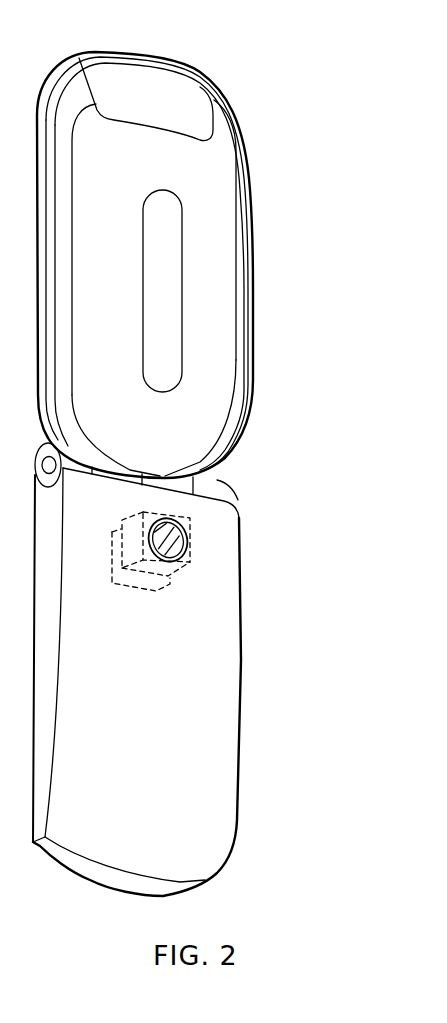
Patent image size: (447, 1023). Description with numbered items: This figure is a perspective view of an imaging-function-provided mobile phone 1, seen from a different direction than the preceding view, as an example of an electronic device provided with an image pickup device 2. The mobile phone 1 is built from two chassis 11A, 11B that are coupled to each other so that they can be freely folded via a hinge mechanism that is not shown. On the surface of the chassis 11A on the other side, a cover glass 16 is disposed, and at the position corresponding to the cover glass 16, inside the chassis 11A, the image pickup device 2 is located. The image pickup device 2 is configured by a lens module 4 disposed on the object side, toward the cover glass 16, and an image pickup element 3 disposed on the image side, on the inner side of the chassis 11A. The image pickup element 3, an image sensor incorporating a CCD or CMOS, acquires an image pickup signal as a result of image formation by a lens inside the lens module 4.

The mobile phone 1 is at (377, 60).
The chassis 11B is at (232, 268).
The chassis 11A is at (210, 732).
The image pickup device 2 is at (311, 571).
The lens module 4 is at (194, 562).
The image pickup element 3 is at (147, 594).
The cover glass 16 is at (184, 528).